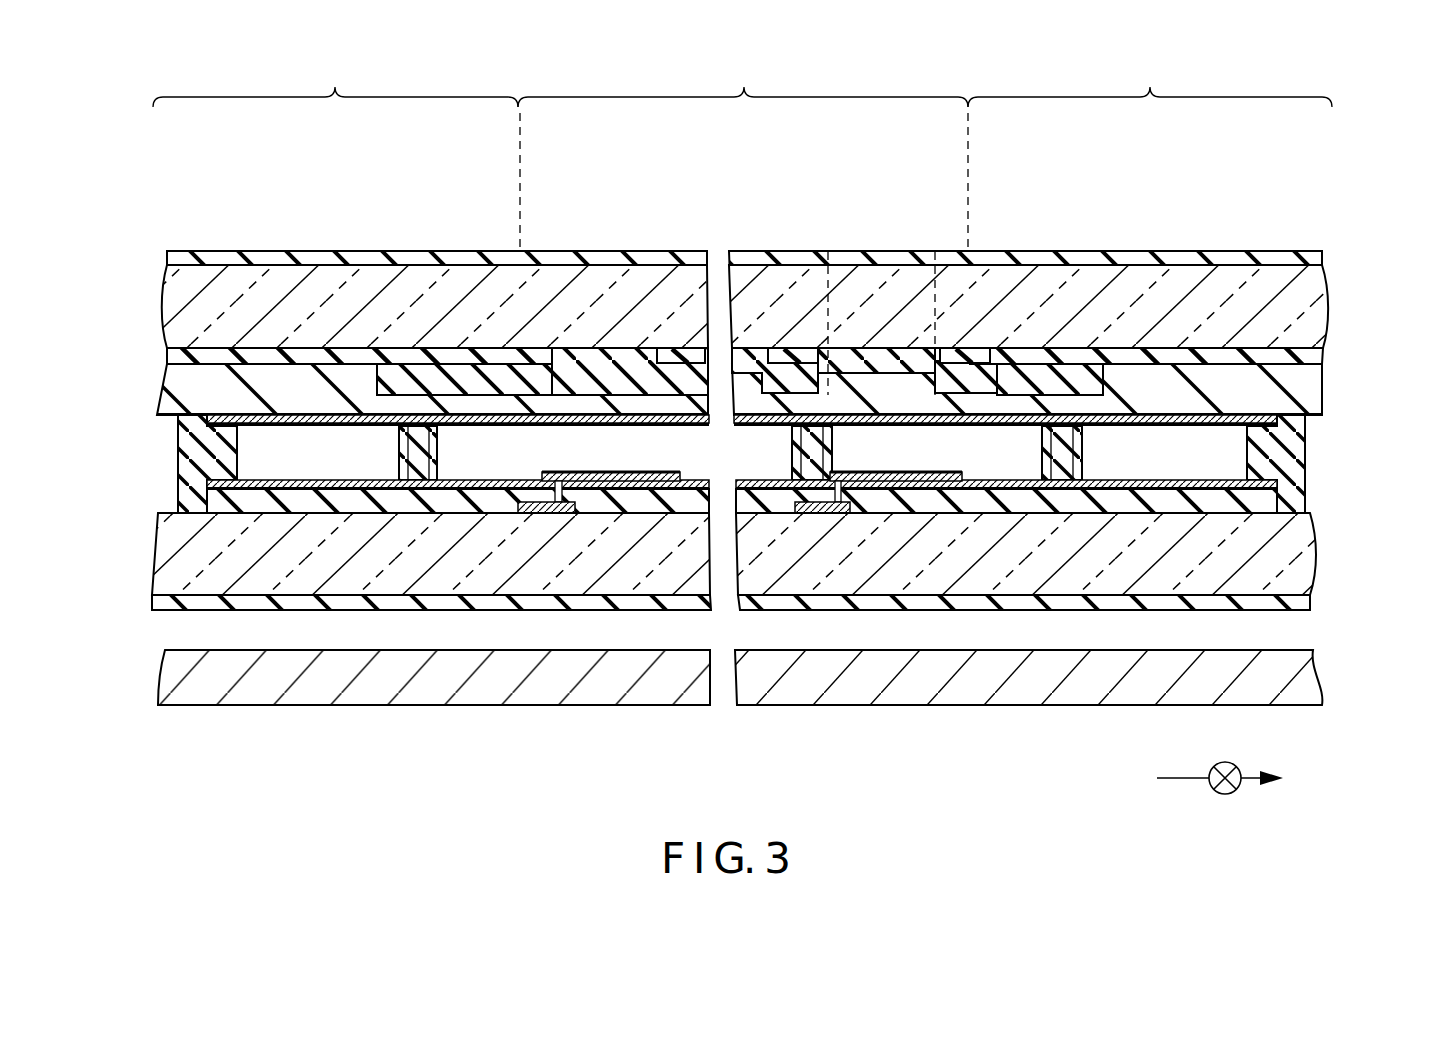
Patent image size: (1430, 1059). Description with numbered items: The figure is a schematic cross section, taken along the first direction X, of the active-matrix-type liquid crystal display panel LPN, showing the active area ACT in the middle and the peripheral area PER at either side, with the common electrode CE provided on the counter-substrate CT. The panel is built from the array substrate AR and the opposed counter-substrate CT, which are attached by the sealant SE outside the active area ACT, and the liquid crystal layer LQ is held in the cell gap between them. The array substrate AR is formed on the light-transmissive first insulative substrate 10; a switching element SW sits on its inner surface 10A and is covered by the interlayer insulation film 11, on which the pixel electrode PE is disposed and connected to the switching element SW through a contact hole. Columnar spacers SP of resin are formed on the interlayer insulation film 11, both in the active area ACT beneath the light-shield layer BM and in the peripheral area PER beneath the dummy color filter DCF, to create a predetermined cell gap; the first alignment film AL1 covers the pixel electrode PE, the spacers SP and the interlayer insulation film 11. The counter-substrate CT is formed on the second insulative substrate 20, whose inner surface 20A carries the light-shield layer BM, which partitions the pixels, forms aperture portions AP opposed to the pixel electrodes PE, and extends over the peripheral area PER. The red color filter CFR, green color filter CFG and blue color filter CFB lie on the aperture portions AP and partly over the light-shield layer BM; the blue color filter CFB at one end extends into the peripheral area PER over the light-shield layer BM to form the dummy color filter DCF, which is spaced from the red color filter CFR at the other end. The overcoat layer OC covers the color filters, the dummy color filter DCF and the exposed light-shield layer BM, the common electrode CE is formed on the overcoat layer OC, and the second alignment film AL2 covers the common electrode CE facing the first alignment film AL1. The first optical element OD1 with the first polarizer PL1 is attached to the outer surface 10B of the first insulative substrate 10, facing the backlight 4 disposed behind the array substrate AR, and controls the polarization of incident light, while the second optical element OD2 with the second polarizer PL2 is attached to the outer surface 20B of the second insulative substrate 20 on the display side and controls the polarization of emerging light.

The peripheral area PER is at (742, 83).
The active area ACT is at (743, 227).
The liquid crystal display panel LPN is at (743, 469).
The counter-substrate CT is at (732, 324).
The array substrate AR is at (715, 612).
The second insulative substrate 20 is at (1313, 302).
The inner surface of the second insulative substrate 20A is at (175, 358).
The outer surface of the second insulative substrate 20B is at (696, 228).
The second optical element OD2 is at (696, 246).
The second polarizer PL2 is at (183, 258).
The light-shield layer BM is at (233, 347).
The overcoat layer OC is at (290, 380).
The dummy color filter DCF is at (430, 380).
The blue color filter CFB is at (612, 375).
The green color filter CFG is at (770, 395).
The red color filter CFR is at (952, 395).
The aperture portion AP is at (828, 252).
The common electrode CE is at (1243, 404).
The second alignment film AL2 is at (1240, 428).
The first alignment film AL1 is at (1273, 488).
The sealant SE is at (188, 438).
The liquid crystal layer LQ is at (250, 458).
The columnar spacer SP is at (399, 455).
The pixel electrode PE is at (628, 482).
The switching element SW is at (557, 502).
The interlayer insulation film 11 is at (1255, 503).
The first insulative substrate 10 is at (1293, 567).
The inner surface of the first insulative substrate 10A is at (230, 505).
The outer surface of the first insulative substrate 10B is at (687, 633).
The first optical element OD1 is at (687, 609).
The first polarizer PL1 is at (687, 616).
The backlight 4 is at (1293, 680).
The first direction X is at (1231, 778).